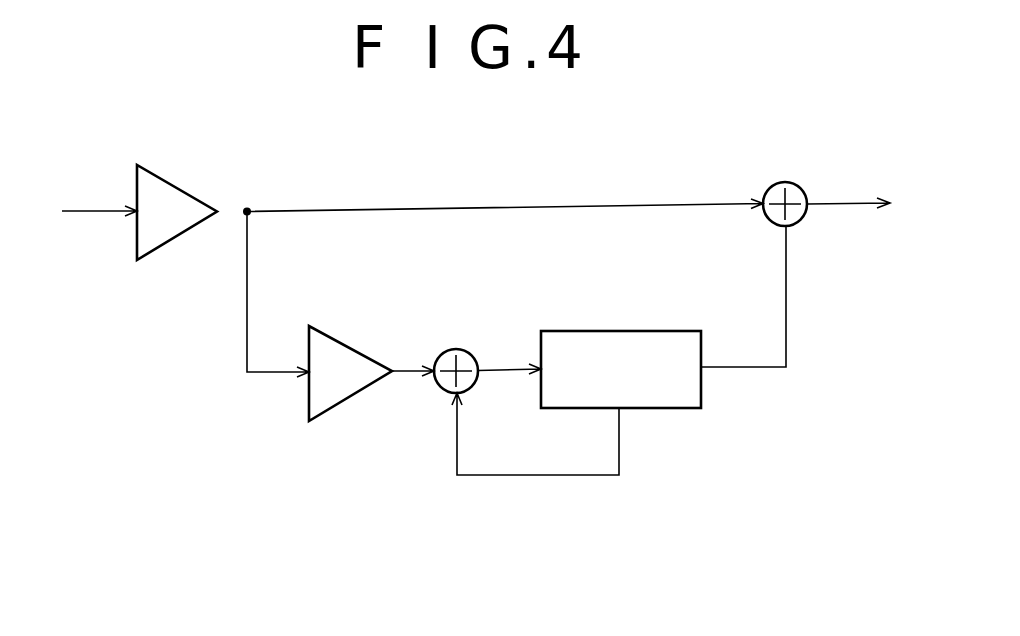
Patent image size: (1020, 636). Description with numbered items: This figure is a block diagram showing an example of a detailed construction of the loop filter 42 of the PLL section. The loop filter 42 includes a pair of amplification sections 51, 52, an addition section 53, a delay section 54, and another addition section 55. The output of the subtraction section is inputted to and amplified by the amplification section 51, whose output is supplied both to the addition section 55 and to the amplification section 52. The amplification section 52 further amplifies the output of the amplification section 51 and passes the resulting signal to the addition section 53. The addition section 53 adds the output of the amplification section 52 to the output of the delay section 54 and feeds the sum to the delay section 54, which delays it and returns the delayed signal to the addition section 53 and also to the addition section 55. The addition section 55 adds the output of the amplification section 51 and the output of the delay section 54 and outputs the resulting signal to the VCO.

The loop filter 42 is at (473, 595).
The amplification section 51 is at (184, 192).
The amplification section 52 is at (357, 350).
The addition section 53 is at (455, 348).
The delay section 54 is at (628, 331).
The addition section 55 is at (786, 182).